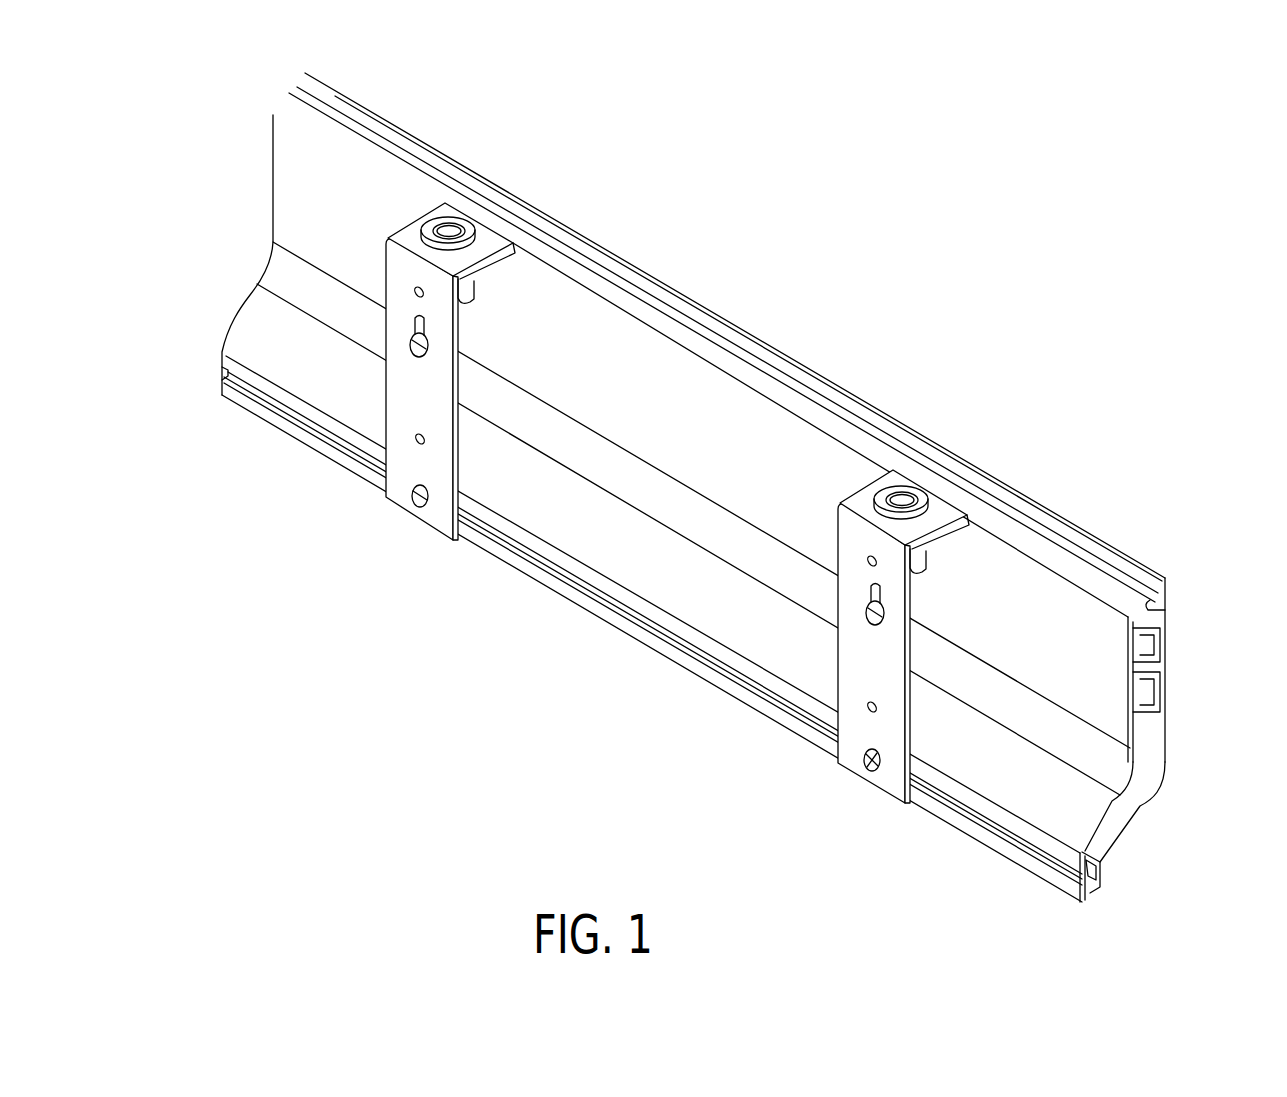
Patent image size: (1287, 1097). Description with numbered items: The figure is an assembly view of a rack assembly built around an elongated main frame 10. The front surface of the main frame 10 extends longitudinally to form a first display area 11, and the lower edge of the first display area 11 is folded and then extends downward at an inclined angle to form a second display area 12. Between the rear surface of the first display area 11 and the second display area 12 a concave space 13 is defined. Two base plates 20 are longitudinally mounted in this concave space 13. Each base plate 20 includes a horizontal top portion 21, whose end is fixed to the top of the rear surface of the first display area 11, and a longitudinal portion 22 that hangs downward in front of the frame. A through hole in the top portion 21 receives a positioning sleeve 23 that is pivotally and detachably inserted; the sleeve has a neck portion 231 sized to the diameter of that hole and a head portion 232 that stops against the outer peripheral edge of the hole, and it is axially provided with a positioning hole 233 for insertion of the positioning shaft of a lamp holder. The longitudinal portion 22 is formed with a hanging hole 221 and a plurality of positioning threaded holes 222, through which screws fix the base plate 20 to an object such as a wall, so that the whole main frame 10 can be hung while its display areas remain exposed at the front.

The main frame 10 is at (742, 493).
The first display area 11 is at (1192, 580).
The second display area 12 is at (1090, 913).
The concave space 13 is at (677, 443).
The base plate 20 is at (636, 431).
The top portion 21 is at (410, 232).
The longitudinal portion 22 is at (530, 521).
The hanging hole 221 is at (412, 336).
The positioning threaded hole 222 is at (413, 442).
The positioning sleeve 23 is at (772, 331).
The neck portion 231 is at (473, 283).
The head portion 232 is at (473, 227).
The positioning hole 233 is at (450, 226).